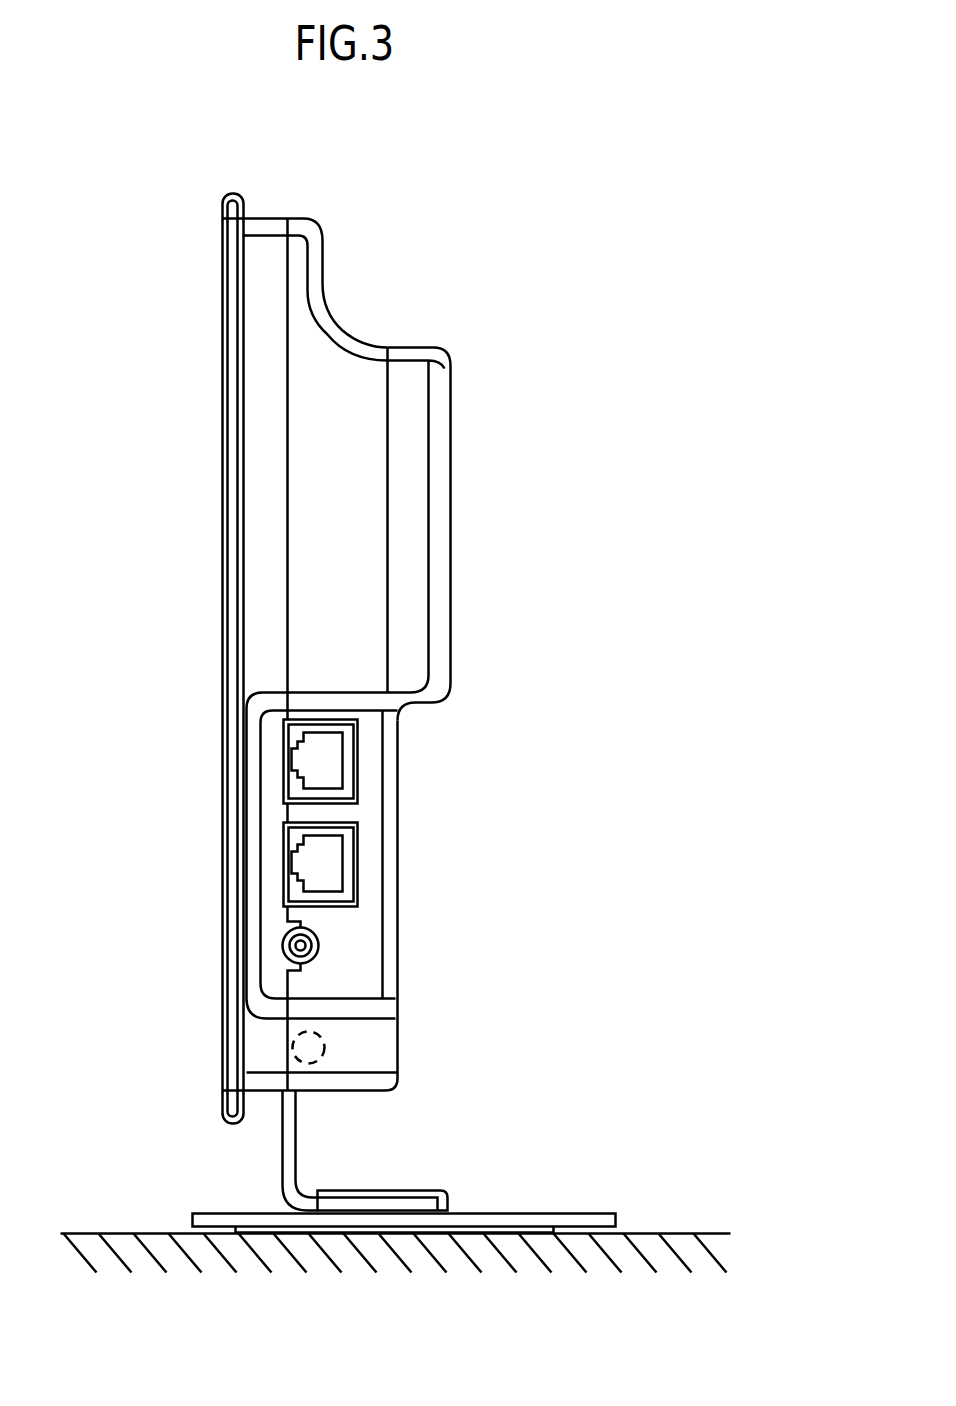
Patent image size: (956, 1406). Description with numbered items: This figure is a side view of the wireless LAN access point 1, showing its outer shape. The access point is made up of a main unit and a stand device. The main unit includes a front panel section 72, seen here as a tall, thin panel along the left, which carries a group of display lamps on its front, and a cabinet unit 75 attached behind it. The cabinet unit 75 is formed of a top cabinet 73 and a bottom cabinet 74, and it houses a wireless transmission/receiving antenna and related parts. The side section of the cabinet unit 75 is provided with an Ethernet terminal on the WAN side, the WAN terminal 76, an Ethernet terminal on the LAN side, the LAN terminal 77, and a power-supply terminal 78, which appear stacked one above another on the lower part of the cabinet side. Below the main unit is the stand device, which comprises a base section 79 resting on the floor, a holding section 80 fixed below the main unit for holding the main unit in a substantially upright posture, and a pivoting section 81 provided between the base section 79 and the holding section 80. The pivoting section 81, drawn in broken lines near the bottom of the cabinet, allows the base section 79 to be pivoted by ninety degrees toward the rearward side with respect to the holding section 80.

The wireless LAN access point 1 is at (467, 333).
The front panel section 72 is at (222, 490).
The top cabinet 73 is at (265, 298).
The bottom cabinet 74 is at (330, 377).
The cabinet unit 75 is at (453, 228).
The WAN terminal 76 is at (327, 765).
The LAN terminal 77 is at (327, 862).
The power-supply terminal 78 is at (317, 941).
The base section 79 is at (553, 1213).
The holding section 80 is at (282, 1163).
The pivoting section 81 is at (330, 1043).